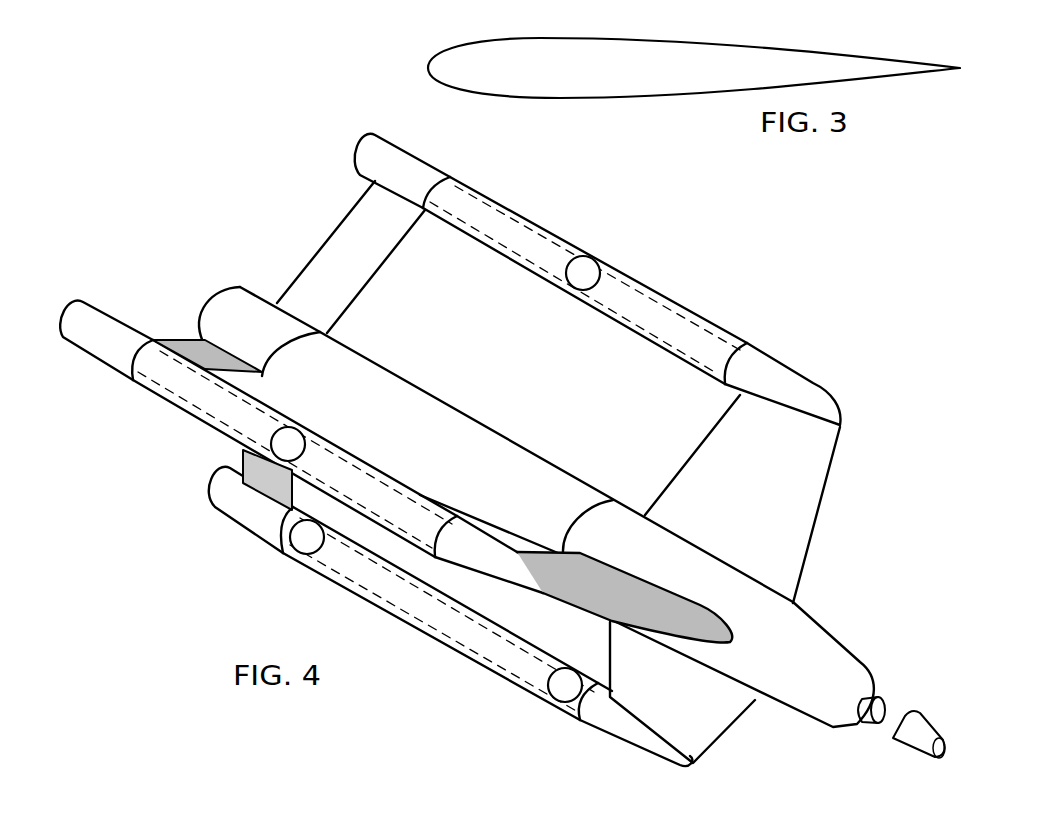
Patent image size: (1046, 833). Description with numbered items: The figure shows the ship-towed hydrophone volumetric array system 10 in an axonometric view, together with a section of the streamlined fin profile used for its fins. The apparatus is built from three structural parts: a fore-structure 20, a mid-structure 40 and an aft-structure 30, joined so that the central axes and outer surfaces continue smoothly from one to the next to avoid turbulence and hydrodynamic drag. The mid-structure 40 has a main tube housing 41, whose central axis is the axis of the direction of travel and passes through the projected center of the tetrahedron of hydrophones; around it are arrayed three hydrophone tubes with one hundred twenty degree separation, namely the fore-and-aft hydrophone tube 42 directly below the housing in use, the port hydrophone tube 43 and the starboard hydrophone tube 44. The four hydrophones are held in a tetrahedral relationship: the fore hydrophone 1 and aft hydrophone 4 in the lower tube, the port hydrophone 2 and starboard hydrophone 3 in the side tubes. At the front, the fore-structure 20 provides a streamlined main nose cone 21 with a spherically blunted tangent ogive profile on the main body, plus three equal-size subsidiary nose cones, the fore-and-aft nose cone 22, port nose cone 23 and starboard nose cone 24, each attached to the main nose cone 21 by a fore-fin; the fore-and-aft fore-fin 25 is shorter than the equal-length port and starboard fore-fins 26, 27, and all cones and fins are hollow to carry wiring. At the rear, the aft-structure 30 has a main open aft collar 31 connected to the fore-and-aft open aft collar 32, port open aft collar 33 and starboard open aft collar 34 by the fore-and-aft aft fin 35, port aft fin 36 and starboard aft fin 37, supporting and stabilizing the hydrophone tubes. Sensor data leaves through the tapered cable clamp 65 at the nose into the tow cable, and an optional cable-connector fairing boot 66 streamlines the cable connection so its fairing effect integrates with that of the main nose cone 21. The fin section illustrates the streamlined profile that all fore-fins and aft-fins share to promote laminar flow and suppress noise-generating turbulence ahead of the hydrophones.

The ship-towed hydrophone volumetric array system 10 is at (86, 138).
The fore-structure 20 is at (907, 434).
The main nose cone 21 is at (855, 647).
The fore-and-aft nose cone 22 is at (655, 747).
The port nose cone 23 is at (790, 386).
The starboard nose cone 24 is at (518, 588).
The fore-and-aft fore-fin 25 is at (725, 712).
The port fore-fin 26 is at (805, 490).
The starboard fore-fin 27 is at (578, 592).
The aft-structure 30 is at (222, 203).
The main open aft collar 31 is at (236, 294).
The fore-and-aft open aft collar 32 is at (230, 506).
The port open aft collar 33 is at (363, 160).
The starboard open aft collar 34 is at (84, 304).
The fore-and-aft aft fin 35 is at (250, 462).
The port aft fin 36 is at (345, 224).
The starboard aft fin 37 is at (170, 340).
The mid-structure 40 is at (542, 198).
The main tube housing 41 is at (511, 458).
The fore-and-aft hydrophone tube 42 is at (470, 640).
The port hydrophone tube 43 is at (668, 310).
The starboard hydrophone tube 44 is at (178, 402).
The fore hydrophone 1 is at (562, 701).
The port hydrophone 2 is at (586, 272).
The starboard hydrophone 3 is at (272, 447).
The aft hydrophone 4 is at (303, 548).
The tapered cable clamp 65 is at (878, 726).
The cable-connector fairing boot 66 is at (918, 752).